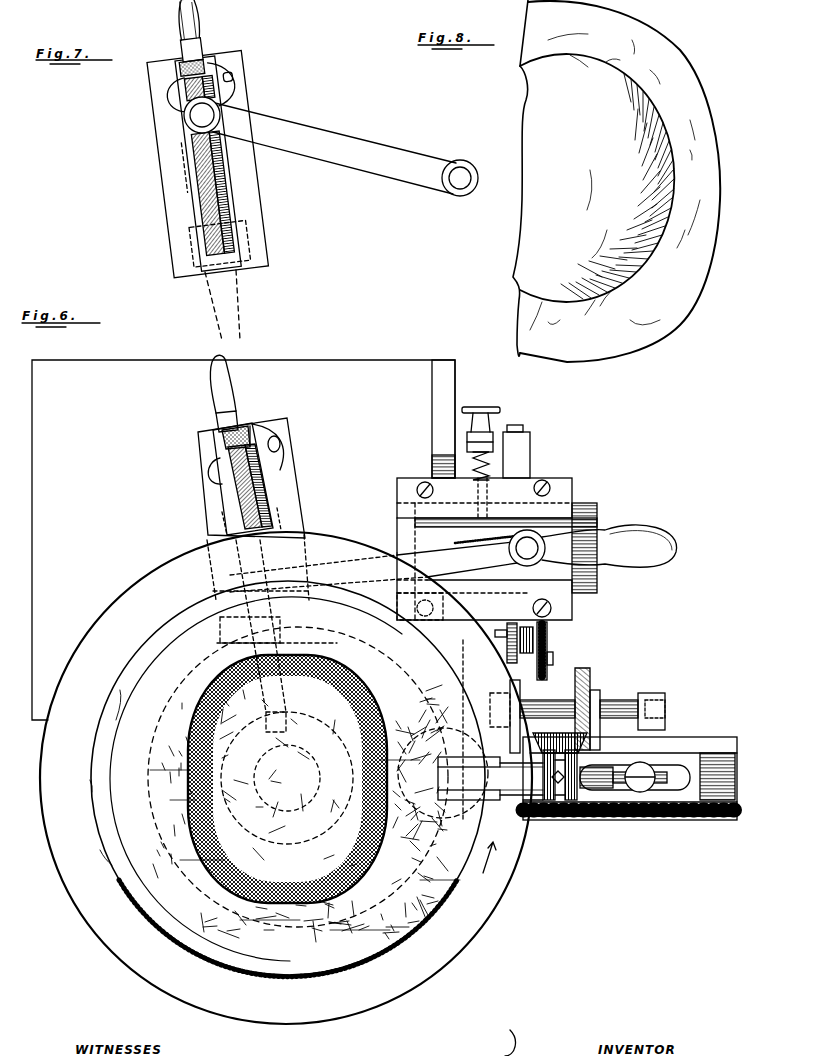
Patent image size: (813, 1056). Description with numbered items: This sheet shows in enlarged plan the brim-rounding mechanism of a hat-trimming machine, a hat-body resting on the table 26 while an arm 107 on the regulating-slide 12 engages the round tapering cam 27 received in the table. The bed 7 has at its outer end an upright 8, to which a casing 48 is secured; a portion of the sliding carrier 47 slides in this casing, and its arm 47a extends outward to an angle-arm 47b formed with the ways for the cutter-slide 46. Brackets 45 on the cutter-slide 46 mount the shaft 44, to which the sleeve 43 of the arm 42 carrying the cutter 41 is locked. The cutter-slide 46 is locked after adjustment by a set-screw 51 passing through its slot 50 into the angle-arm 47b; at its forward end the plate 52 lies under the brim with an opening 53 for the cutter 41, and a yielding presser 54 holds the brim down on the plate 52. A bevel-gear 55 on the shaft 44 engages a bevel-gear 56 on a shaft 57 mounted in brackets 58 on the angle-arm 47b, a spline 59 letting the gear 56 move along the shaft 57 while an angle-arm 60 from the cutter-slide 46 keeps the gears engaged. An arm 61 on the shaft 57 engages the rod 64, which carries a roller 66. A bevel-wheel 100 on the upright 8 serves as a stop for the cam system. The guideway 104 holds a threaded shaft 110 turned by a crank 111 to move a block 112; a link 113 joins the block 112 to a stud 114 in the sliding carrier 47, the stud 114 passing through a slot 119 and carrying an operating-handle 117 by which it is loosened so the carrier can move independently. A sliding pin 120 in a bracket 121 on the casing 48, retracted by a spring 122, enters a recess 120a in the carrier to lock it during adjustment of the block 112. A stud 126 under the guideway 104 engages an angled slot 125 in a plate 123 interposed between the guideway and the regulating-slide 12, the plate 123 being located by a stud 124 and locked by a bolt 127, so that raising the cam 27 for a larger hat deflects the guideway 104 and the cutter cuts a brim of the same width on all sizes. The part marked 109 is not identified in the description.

In FIG. 6, the bed 7 is at (243, 540).
In FIG. 6, the upright 8 is at (443, 419).
In FIG. 6, the regulating-slide 12 is at (299, 490).
In FIG. 6, the table 26 is at (286, 778).
In FIG. 6, the round tapering cam 27 is at (298, 777).
In FIG. 6, the cutter 41 is at (458, 778).
In FIG. 6, the arm 42 is at (521, 778).
In FIG. 6, the sleeve 43 is at (562, 790).
In FIG. 6, the shaft 44 is at (558, 790).
In FIG. 6, the brackets 45 is at (535, 807).
In FIG. 6, the cutter-slide 46 is at (635, 784).
In FIG. 6, the sliding carrier 47 is at (497, 548).
In FIG. 6, the arm 47a is at (488, 628).
In FIG. 6, the angle-arm 47b is at (715, 815).
In FIG. 6, the casing 48 is at (572, 494).
In FIG. 6, the slot 50 is at (660, 772).
In FIG. 6, the set-screw 51 is at (641, 792).
In FIG. 6, the plate 52 is at (517, 795).
In FIG. 6, the opening 53 is at (510, 690).
In FIG. 6, the yielding presser 54 is at (432, 815).
In FIG. 6, the bevel-gear 55 is at (560, 736).
In FIG. 6, the bevel-gear 56 is at (588, 672).
In FIG. 6, the shaft 57 is at (624, 700).
In FIG. 6, the brackets 58 is at (662, 695).
In FIG. 6, the spline 59 is at (560, 695).
In FIG. 6, the angle-arm 60 is at (592, 684).
In FIG. 6, the arm 61 is at (520, 645).
In FIG. 6, the rod 64 is at (507, 645).
In FIG. 6, the roller 66 is at (547, 638).
In FIG. 6, the bevel-wheel 100 is at (443, 773).
In FIG. 7, the guideway 104 is at (191, 148).
In FIG. 6, the guideway 104 is at (262, 489).
In FIG. 7, the arm 107 is at (236, 305).
In FIG. 6, the slide 109 is at (261, 636).
In FIG. 7, the threaded shaft 110 is at (205, 196).
In FIG. 6, the threaded shaft 110 is at (240, 480).
In FIG. 7, the crank 111 is at (198, 22).
In FIG. 6, the crank 111 is at (228, 392).
In FIG. 7, the block 112 is at (185, 103).
In FIG. 6, the block 112 is at (272, 589).
In FIG. 7, the link 113 is at (345, 149).
In FIG. 6, the link 113 is at (373, 567).
In FIG. 6, the stud 114 is at (527, 548).
In FIG. 6, the operating-handle 117 is at (609, 546).
In FIG. 6, the slot 119 is at (483, 540).
In FIG. 6, the sliding pin 120 is at (491, 462).
In FIG. 6, the recess 120a is at (469, 549).
In FIG. 6, the bracket 121 is at (516, 451).
In FIG. 6, the spring 122 is at (473, 457).
In FIG. 7, the plate 123 is at (246, 92).
In FIG. 6, the plate 123 is at (274, 462).
In FIG. 6, the stud 124 is at (250, 426).
In FIG. 7, the slot 125 is at (180, 92).
In FIG. 6, the slot 125 is at (222, 463).
In FIG. 7, the stud 126 is at (180, 58).
In FIG. 6, the stud 126 is at (226, 440).
In FIG. 7, the bolt 127 is at (238, 74).
In FIG. 6, the bolt 127 is at (280, 440).